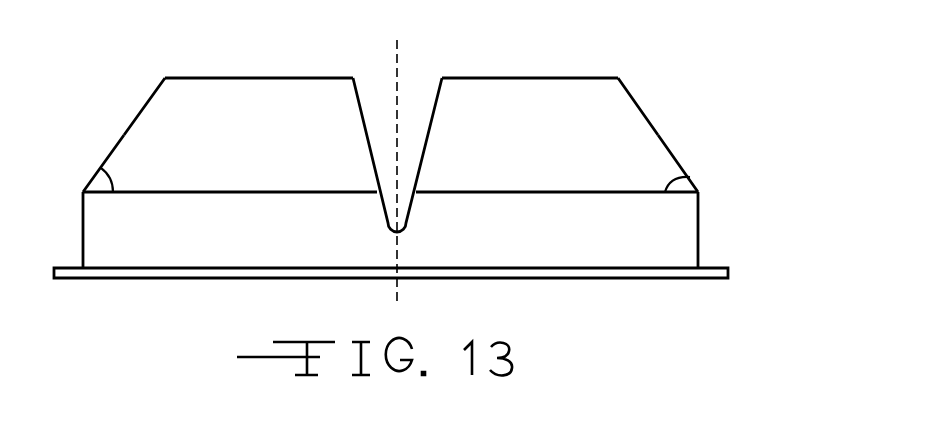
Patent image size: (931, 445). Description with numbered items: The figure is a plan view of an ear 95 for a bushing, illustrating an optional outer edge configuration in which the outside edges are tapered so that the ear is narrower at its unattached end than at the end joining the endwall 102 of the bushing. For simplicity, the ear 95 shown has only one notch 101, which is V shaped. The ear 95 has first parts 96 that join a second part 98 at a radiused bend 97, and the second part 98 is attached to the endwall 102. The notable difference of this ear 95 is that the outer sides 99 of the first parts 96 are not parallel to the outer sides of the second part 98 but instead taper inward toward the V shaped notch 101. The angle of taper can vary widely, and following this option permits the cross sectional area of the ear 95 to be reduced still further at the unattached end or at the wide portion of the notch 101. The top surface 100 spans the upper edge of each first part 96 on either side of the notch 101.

The ear 95 is at (660, 69).
The first parts 96 is at (138, 141).
The radiused bend 97 is at (102, 166).
The second part 98 is at (693, 240).
The outer sides 99 is at (140, 112).
The top surface 100 is at (516, 78).
The notch 101 is at (365, 127).
The endwall 102 is at (728, 272).